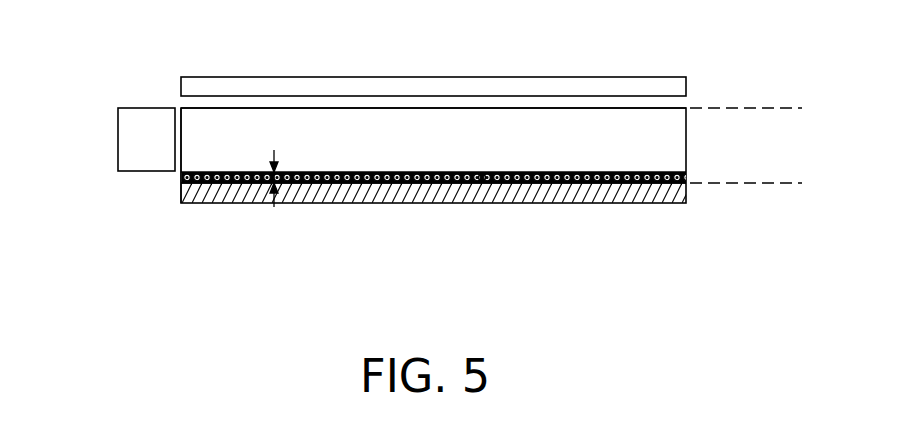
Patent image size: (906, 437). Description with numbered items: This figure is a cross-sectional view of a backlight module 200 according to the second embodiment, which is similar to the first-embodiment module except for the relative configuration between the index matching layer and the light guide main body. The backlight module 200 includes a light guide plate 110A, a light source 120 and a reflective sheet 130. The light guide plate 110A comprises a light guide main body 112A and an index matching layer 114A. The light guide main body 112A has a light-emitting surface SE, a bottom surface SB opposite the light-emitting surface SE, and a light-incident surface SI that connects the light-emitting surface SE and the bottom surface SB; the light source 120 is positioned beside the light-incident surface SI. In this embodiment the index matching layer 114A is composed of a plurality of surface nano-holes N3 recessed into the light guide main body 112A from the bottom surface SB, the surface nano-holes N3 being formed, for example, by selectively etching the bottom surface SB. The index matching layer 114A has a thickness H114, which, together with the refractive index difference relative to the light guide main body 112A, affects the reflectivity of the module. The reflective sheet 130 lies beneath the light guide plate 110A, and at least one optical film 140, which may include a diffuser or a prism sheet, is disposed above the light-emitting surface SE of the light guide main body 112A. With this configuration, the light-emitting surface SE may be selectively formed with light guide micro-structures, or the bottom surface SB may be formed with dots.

The backlight module 200 is at (447, 172).
The light guide plate 110A is at (522, 222).
The light guide main body 112A is at (803, 108).
The index matching layer 114A is at (690, 183).
The reflective sheet 130 is at (680, 193).
The optical film 140 is at (680, 87).
The light source 120 is at (132, 137).
The light-emitting surface SE is at (213, 106).
The light-incident surface SI is at (180, 138).
The bottom surface SB is at (215, 184).
The thickness of the index matching layer H114 is at (292, 178).
The surface nano-holes N3 is at (482, 176).